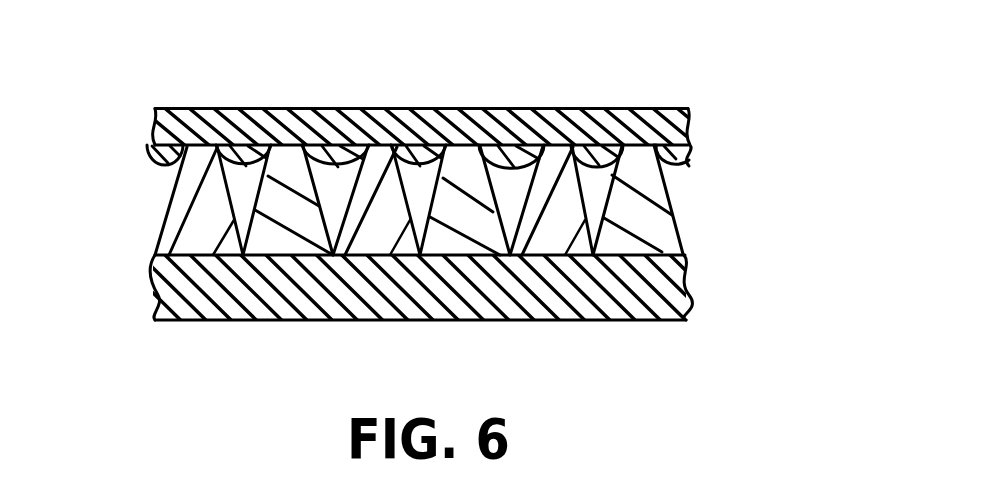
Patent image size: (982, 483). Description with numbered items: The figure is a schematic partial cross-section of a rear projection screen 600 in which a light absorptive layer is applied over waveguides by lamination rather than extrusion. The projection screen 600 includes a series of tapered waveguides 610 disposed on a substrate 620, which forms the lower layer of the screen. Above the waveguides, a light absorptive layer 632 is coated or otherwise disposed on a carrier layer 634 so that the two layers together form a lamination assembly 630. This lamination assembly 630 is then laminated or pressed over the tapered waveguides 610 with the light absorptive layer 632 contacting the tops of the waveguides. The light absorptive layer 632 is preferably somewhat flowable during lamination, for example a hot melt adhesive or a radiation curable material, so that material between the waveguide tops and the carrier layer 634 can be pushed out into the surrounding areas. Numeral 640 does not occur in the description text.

The projection screen 600 is at (481, 211).
The tapered waveguides 610 is at (660, 228).
The substrate 620 is at (652, 305).
The lamination assembly 630 is at (387, 93).
The light absorptive layer 632 is at (135, 168).
The carrier layer 634 is at (517, 108).
The post 640 is at (420, 197).